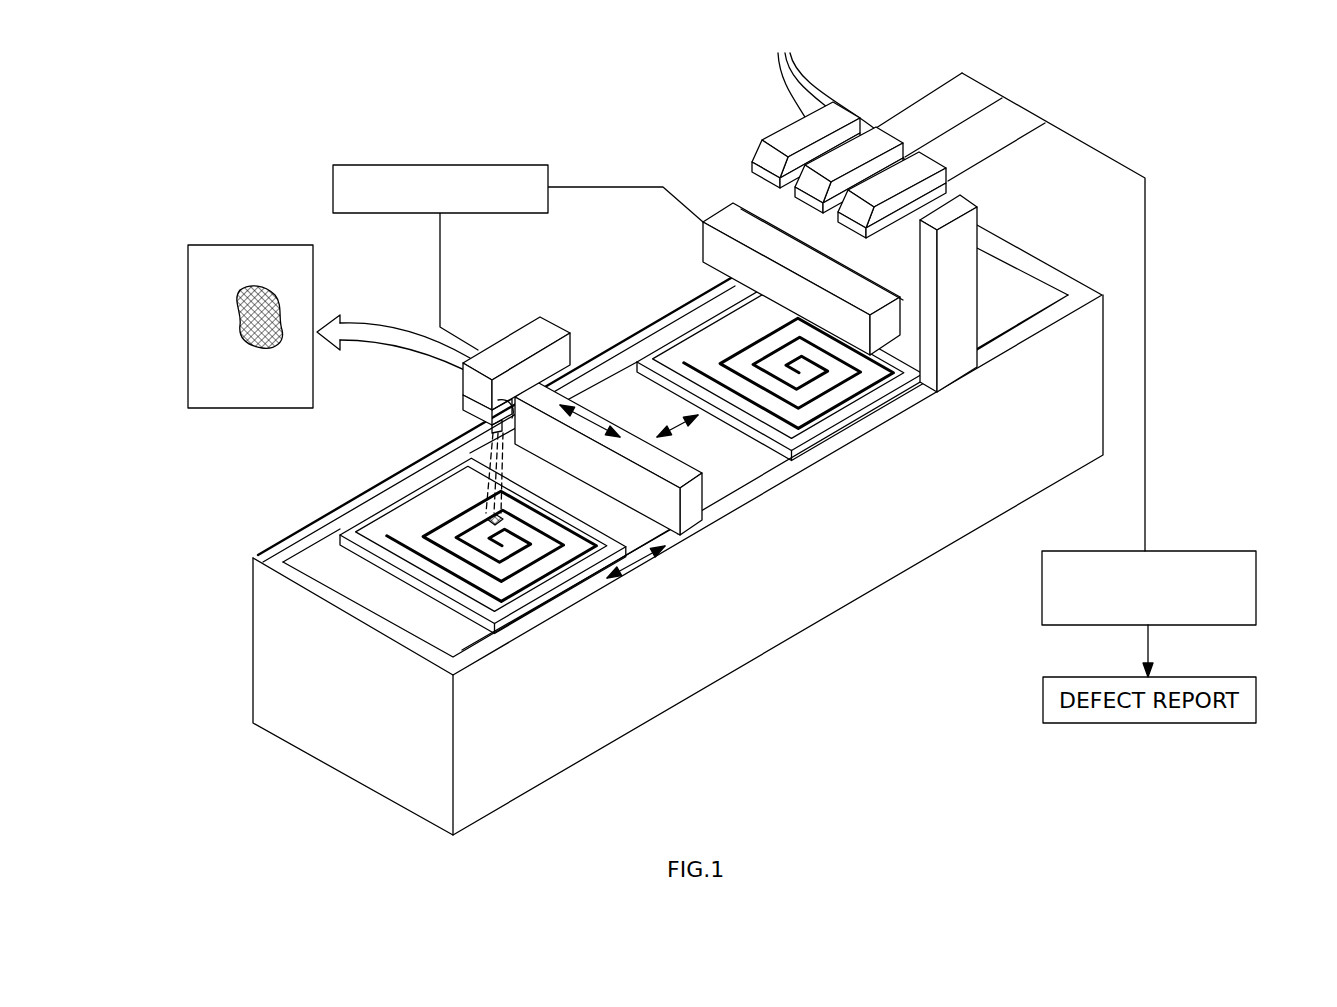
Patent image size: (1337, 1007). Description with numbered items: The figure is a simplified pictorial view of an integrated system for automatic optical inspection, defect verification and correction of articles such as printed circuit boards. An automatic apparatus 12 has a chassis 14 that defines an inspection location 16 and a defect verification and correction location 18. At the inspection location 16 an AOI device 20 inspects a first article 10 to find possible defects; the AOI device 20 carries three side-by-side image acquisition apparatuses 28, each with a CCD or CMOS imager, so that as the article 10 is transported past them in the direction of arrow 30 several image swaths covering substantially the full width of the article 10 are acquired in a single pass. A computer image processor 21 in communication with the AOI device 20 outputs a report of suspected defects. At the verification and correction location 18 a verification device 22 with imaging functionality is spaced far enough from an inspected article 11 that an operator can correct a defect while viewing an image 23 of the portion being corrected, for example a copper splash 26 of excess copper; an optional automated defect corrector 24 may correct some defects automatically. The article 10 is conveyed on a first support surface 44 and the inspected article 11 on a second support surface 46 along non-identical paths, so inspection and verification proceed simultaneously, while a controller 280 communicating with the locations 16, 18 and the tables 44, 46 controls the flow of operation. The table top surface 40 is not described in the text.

The article 10 is at (652, 362).
The inspected article 11 is at (428, 507).
The automatic apparatus 12 is at (632, 248).
The chassis 14 is at (353, 747).
The inspection location 16 is at (807, 255).
The defect verification and correction location 18 is at (470, 369).
The AOI device 20 is at (752, 203).
The computer image processor 21 is at (1256, 590).
The verification device 22 is at (463, 383).
The image 23 is at (188, 320).
The defect corrector 24 is at (463, 412).
The copper splash 26 is at (260, 345).
The image acquisition apparatus 28 is at (898, 132).
The arrow 30 is at (700, 422).
The table top surface 40 is at (287, 600).
The first support surface 44 is at (672, 332).
The second support surface 46 is at (440, 477).
The controller 280 is at (418, 165).